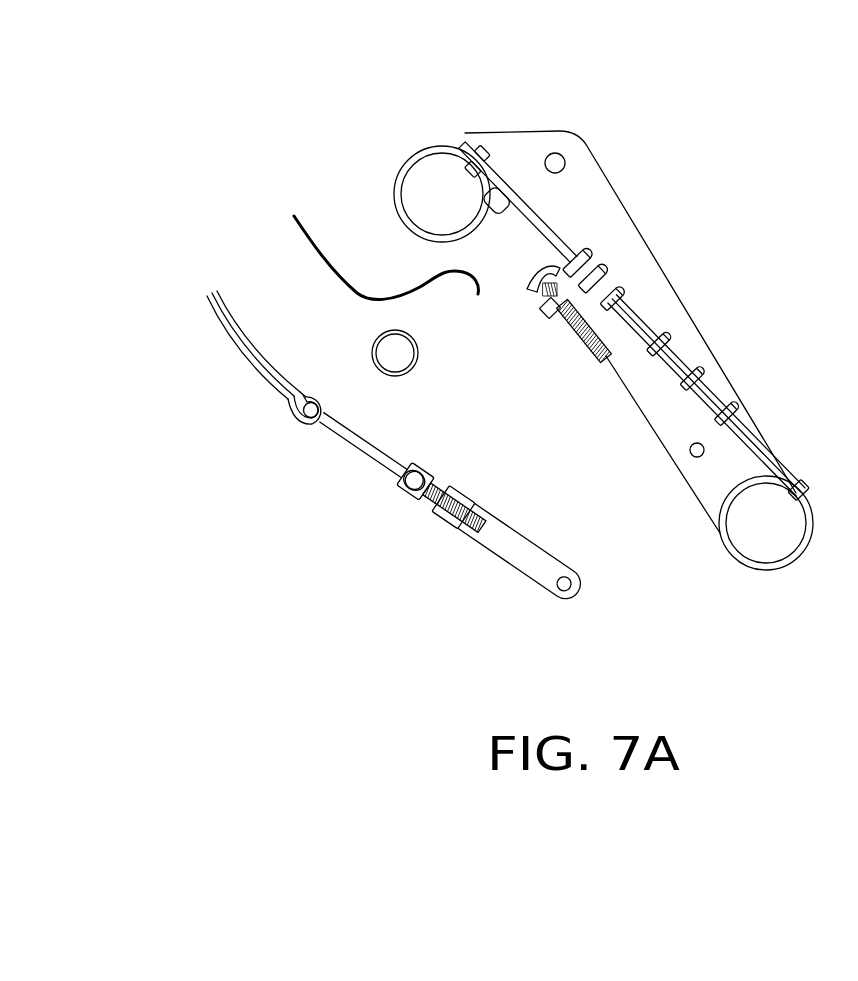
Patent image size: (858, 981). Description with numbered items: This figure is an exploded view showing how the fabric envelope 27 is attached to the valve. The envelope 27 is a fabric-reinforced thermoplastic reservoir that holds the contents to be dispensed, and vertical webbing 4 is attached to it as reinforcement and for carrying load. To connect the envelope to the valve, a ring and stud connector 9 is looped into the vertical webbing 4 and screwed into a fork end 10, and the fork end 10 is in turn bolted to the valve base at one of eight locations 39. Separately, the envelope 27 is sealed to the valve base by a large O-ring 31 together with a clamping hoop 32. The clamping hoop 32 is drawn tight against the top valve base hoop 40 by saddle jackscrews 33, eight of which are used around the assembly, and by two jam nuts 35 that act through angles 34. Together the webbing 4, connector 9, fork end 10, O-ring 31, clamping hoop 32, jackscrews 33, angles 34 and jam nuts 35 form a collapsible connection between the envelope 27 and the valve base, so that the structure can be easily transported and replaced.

The webbing 4 is at (234, 371).
The ring and stud connector 9 is at (370, 471).
The fork end 10 is at (480, 561).
The envelope 27 is at (306, 251).
The large O-ring 31 is at (553, 176).
The clamping hoop 32 is at (453, 369).
The saddle jackscrews 33 is at (551, 388).
The angles 34 is at (707, 375).
The jam nuts 35 is at (635, 250).
The locations 39 is at (639, 350).
The top valve base hoop 40 is at (402, 169).